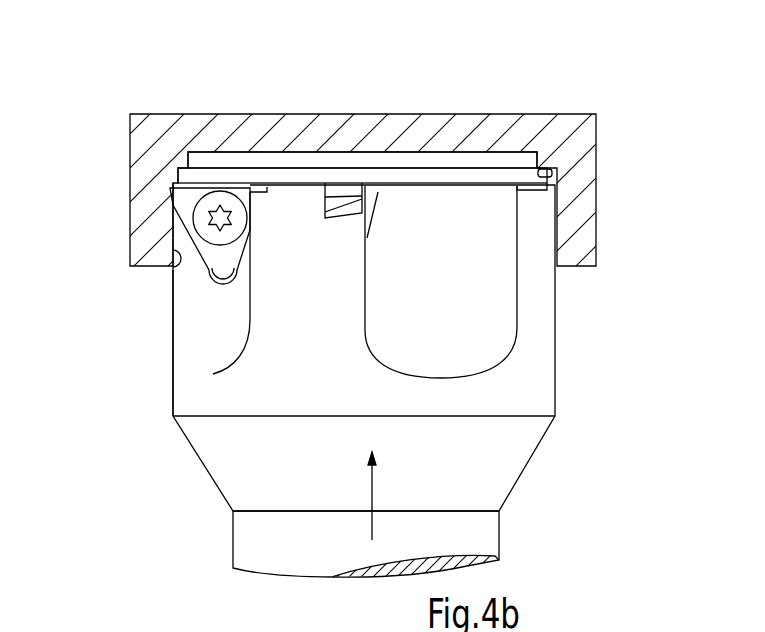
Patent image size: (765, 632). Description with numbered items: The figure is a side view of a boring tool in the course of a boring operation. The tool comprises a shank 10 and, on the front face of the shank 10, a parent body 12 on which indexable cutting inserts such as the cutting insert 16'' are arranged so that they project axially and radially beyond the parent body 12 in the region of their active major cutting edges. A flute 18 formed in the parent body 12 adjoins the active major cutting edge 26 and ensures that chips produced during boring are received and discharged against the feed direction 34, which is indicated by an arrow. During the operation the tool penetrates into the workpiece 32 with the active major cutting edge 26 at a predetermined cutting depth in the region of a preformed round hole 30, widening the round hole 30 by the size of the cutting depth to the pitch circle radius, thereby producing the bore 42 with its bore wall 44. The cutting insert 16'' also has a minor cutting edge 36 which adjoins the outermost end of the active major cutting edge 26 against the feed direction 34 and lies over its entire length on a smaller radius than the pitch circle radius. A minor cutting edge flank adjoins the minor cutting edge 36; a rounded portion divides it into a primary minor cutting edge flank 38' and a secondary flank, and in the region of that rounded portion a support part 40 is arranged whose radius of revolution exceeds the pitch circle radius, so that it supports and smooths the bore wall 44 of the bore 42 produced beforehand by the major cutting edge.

The shank 10 is at (477, 540).
The parent body 12 is at (527, 383).
The cutting insert 16'' is at (238, 151).
The flute 18 is at (202, 318).
The active major cutting edge 26 is at (184, 150).
The preformed round hole 30 is at (548, 173).
The workpiece 32 is at (552, 138).
The feed direction 34 is at (373, 492).
The minor cutting edge 36 is at (210, 627).
The primary minor cutting edge flank 38' is at (325, 623).
The support part 40 is at (170, 204).
The bore 42 is at (124, 317).
The bore wall 44 is at (172, 270).